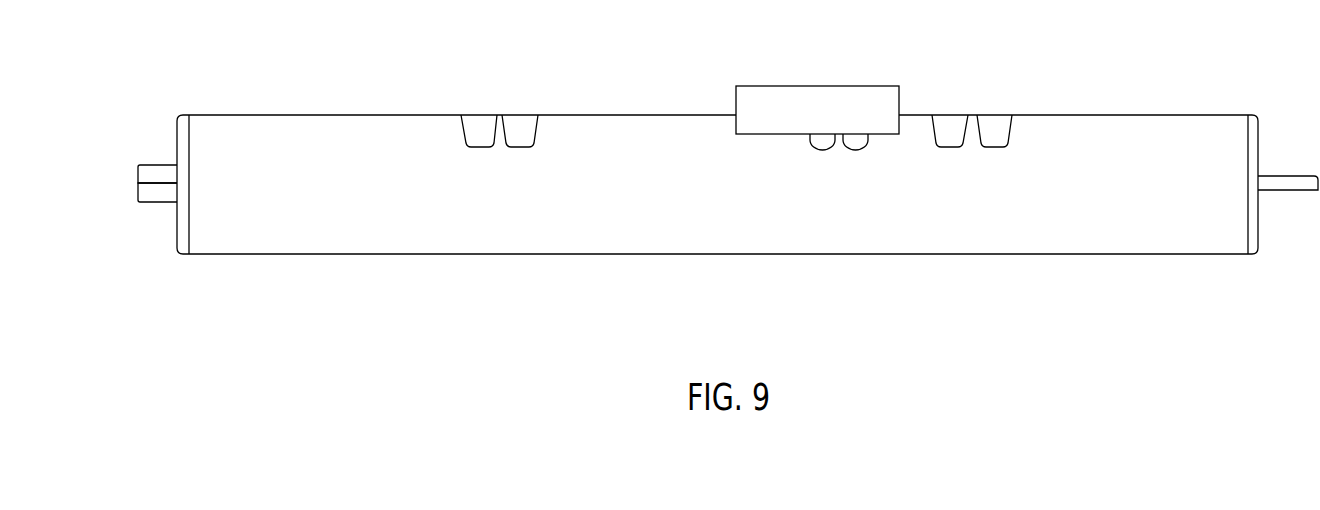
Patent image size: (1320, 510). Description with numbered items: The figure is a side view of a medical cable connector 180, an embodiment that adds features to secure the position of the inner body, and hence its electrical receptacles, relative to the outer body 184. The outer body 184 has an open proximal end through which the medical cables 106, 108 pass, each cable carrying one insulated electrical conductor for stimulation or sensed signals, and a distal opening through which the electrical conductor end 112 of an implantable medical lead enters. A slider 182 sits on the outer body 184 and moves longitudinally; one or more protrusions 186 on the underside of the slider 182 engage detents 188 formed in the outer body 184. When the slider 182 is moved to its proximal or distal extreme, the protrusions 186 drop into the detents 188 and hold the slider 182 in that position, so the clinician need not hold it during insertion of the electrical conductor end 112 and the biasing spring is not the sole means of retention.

The medical cable 106 is at (157, 170).
The medical cable 108 is at (162, 193).
The electrical conductor end 112 is at (1287, 185).
The medical cable connector 180 is at (1010, 255).
The slider 182 is at (805, 90).
The outer body 184 is at (628, 128).
The protrusions 186 is at (857, 142).
The detents 188 is at (995, 127).